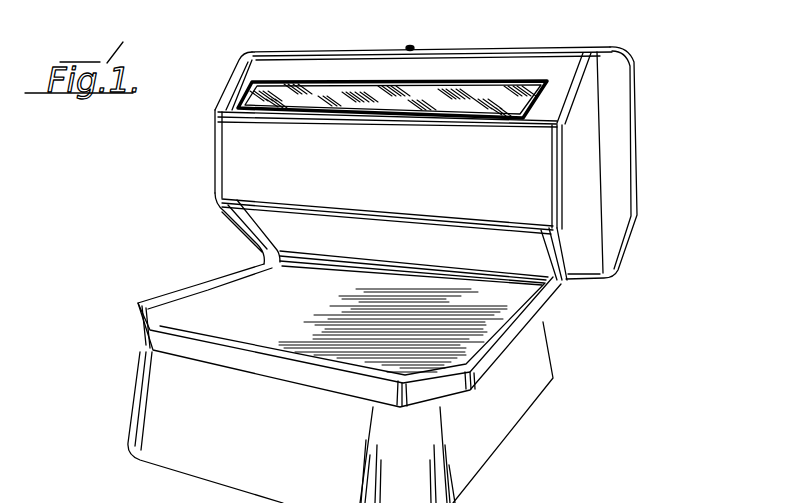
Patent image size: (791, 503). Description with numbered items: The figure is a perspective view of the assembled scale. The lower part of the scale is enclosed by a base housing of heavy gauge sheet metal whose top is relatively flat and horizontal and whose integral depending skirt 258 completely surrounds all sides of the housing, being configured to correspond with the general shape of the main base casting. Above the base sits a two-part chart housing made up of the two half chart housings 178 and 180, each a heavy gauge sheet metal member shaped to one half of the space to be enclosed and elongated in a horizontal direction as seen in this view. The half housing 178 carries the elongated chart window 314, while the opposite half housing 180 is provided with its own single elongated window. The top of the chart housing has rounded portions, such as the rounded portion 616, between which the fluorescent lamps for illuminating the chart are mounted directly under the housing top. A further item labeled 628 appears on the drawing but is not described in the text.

The chart housing 178 is at (352, 170).
The chart housing 180 is at (628, 143).
The skirt 258 is at (538, 358).
The chart window 314 is at (309, 92).
The rounded portion 616 is at (360, 68).
The display screen 628 is at (453, 90).